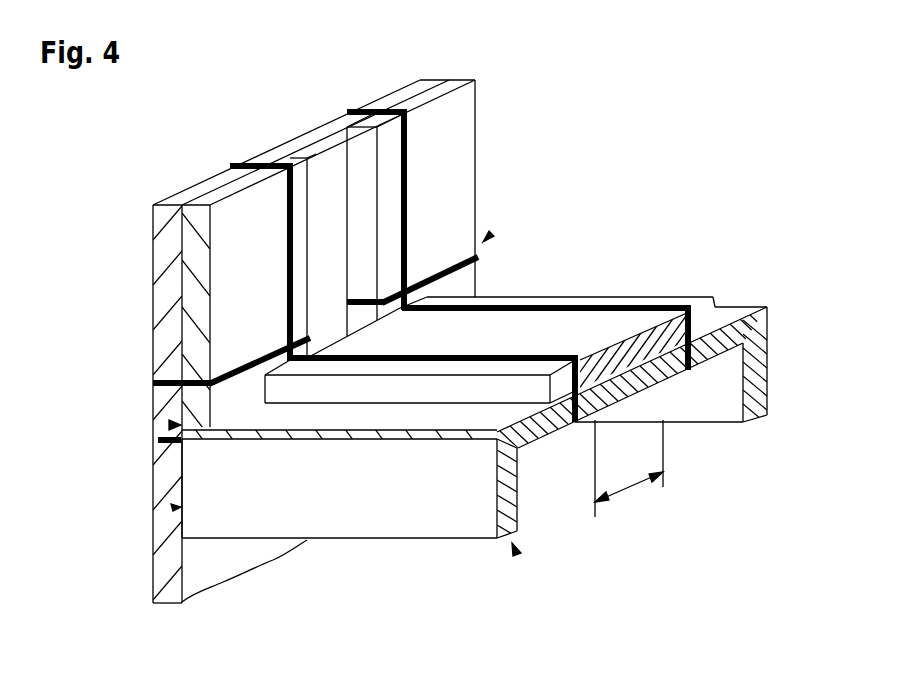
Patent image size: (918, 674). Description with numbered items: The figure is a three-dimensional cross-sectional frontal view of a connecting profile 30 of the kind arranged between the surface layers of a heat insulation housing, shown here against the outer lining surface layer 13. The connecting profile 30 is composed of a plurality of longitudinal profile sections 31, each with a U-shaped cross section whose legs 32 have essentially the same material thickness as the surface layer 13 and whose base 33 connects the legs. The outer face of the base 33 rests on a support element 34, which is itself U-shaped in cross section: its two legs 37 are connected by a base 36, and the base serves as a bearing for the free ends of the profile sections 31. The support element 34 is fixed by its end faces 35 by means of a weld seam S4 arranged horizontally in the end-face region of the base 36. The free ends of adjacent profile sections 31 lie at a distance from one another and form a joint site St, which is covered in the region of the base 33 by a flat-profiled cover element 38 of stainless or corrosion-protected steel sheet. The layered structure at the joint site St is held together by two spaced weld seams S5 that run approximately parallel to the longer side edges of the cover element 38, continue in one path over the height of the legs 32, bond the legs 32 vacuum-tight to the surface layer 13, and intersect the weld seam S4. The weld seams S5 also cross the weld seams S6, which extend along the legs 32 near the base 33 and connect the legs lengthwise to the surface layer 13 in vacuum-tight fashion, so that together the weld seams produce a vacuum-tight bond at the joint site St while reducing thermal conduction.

The surface layer 13 is at (165, 232).
The connecting profile 30 is at (223, 192).
The profile section 31 is at (488, 237).
The leg 32 is at (450, 152).
The base 33 is at (755, 312).
The support element 34 is at (514, 548).
The end face 35 is at (176, 508).
The base 36 is at (552, 423).
The leg 37 is at (700, 403).
The cover element 38 is at (345, 388).
The weld seam S4 is at (158, 447).
The weld seam S5 is at (350, 112).
The weld seam S6 is at (153, 378).
The joint site St is at (629, 469).